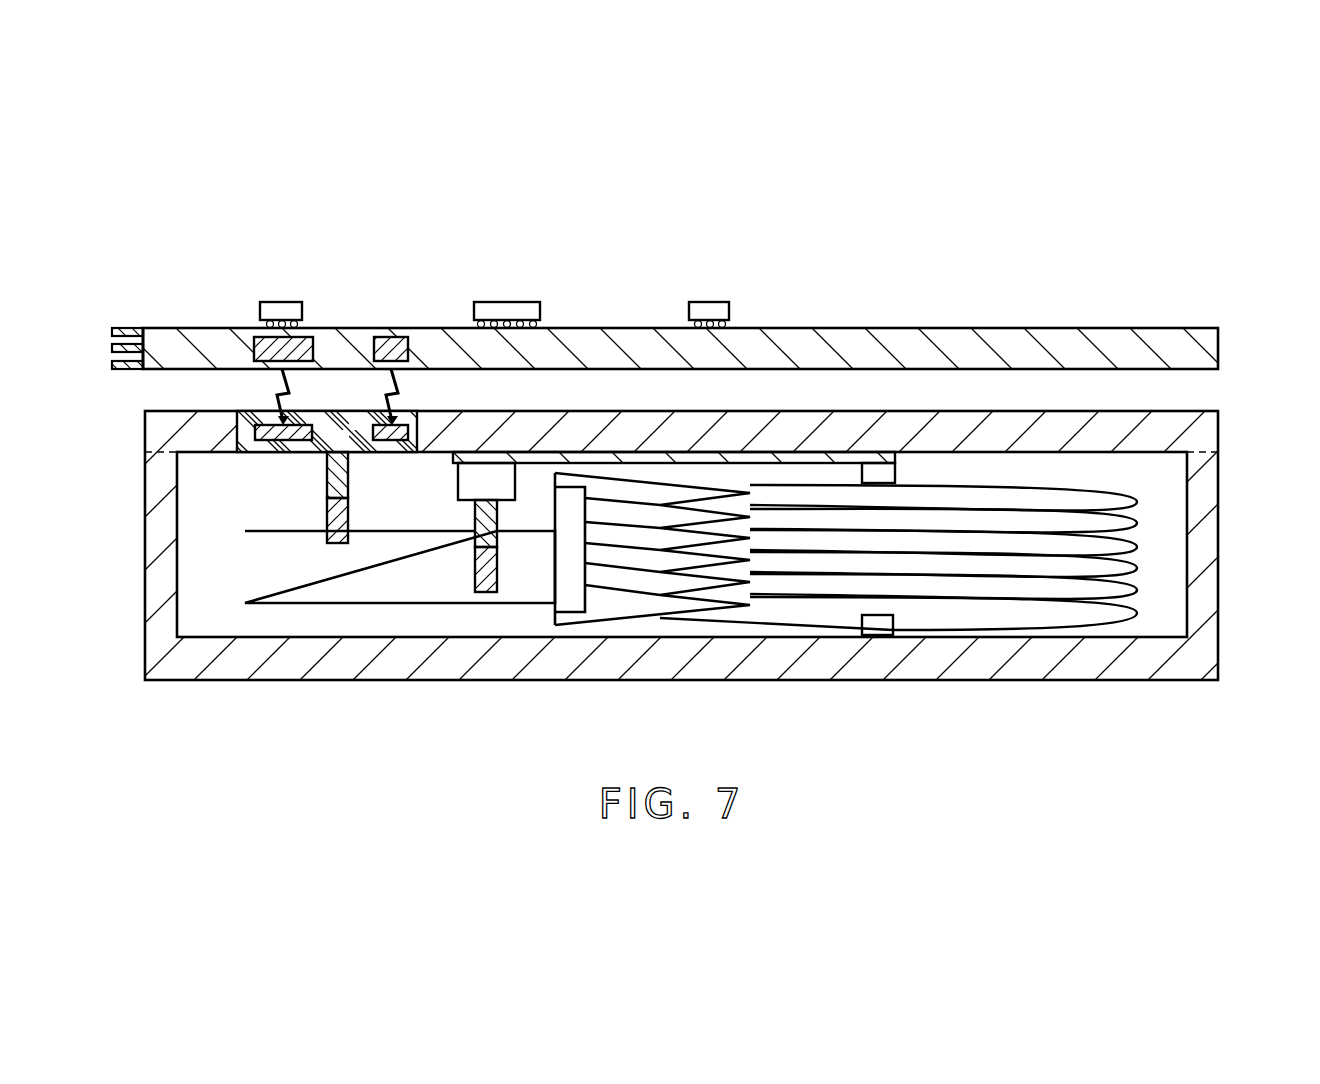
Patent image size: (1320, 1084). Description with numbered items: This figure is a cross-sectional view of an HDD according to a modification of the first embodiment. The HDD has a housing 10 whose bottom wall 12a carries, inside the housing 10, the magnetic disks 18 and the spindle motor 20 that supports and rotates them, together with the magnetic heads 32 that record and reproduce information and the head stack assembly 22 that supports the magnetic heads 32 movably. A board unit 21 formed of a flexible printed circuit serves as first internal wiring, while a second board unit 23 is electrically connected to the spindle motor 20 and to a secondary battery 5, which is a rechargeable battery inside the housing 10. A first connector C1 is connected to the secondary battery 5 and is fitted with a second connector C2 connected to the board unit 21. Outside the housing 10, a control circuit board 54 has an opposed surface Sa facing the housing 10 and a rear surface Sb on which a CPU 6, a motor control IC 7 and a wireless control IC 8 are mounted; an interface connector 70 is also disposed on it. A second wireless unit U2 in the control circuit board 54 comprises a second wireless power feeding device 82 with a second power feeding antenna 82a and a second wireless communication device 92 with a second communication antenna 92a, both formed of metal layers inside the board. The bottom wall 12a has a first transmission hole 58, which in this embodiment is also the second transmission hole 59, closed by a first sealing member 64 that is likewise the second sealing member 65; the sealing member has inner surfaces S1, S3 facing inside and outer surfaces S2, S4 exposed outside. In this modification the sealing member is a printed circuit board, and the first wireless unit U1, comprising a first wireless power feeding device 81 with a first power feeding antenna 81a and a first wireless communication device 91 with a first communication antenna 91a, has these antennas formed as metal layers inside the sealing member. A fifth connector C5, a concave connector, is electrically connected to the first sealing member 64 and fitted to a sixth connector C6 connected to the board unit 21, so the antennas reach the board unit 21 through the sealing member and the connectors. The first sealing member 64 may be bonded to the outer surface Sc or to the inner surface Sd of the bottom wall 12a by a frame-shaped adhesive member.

The housing 10 is at (1222, 623).
The bottom wall 12a is at (1207, 430).
The control circuit board 54 is at (1207, 348).
The interface connector 70 is at (131, 322).
The wireless control IC 8 is at (272, 300).
The CPU 6 is at (510, 302).
The motor control IC 7 is at (710, 302).
The second communication antenna 92a is at (317, 291).
The second wireless communication device 92 is at (313, 338).
The second power feeding antenna 82a is at (422, 291).
The second wireless power feeding device 82 is at (422, 291).
The second wireless unit U2 is at (362, 268).
The first wireless unit U1 is at (336, 611).
The first sealing member 64 is at (327, 360).
The second sealing member 65 is at (345, 425).
The first communication antenna 91a is at (283, 584).
The first wireless communication device 91 is at (268, 442).
The first power feeding antenna 81a is at (388, 584).
The first wireless power feeding device 81 is at (390, 442).
The inner surface S1 is at (301, 483).
The outer surface S2 is at (215, 397).
The inner surface S3 is at (257, 453).
The outer surface S4 is at (250, 410).
The first transmission hole 58 is at (462, 404).
The second transmission hole 59 is at (418, 440).
The fifth connector C5 is at (327, 483).
The sixth connector C6 is at (327, 513).
The first connector C1 is at (477, 521).
The second connector C2 is at (497, 565).
The secondary battery 5 is at (458, 483).
The board unit 21 is at (245, 593).
The head stack assembly 22 is at (632, 488).
The magnetic heads 32 is at (764, 488).
The board unit 23 is at (820, 460).
The spindle motor 20 is at (898, 474).
The magnetic disks 18 is at (1122, 527).
The opposed surface Sa is at (1122, 368).
The rear surface Sb is at (1044, 328).
The outer surface Sc is at (1003, 411).
The inner surface Sd is at (1073, 453).